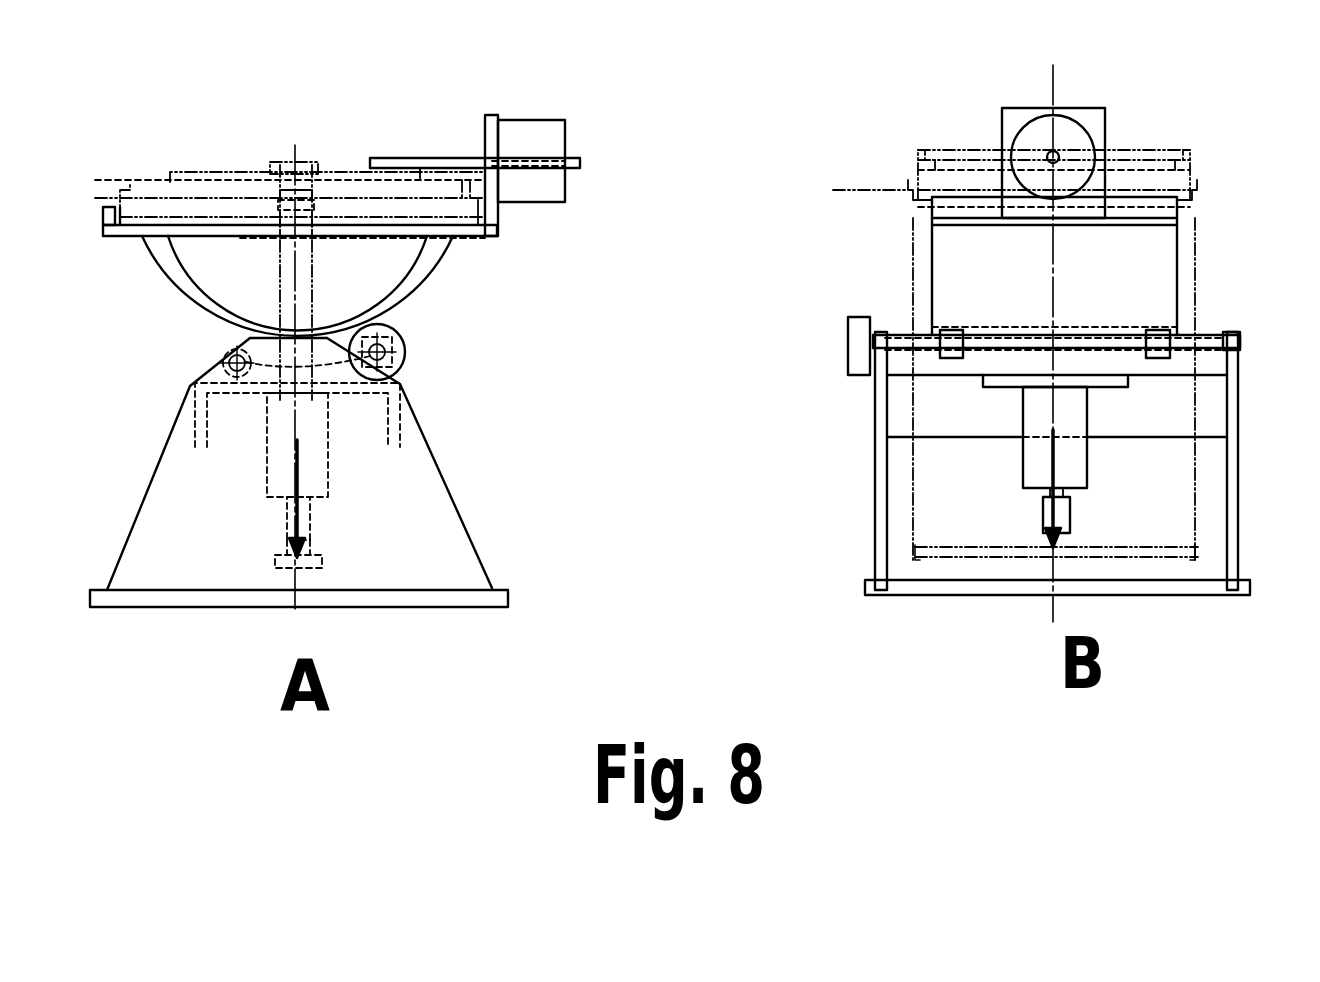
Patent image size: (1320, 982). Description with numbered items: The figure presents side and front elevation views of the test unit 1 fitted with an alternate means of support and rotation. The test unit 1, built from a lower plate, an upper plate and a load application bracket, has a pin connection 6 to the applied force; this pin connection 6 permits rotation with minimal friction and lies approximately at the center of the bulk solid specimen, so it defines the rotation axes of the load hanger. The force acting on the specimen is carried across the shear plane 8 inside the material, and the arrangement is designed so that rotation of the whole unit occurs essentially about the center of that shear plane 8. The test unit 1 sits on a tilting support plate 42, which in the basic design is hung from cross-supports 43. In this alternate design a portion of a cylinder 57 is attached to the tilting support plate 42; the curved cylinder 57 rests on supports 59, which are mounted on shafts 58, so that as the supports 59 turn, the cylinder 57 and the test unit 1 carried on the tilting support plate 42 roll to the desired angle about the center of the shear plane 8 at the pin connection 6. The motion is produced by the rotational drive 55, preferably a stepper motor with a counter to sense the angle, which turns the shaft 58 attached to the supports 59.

In FIG. 8A, the test unit 1 is at (220, 156).
In FIG. 8B, the test unit 1 is at (1146, 126).
In FIG. 8A, the pin connection 6 is at (295, 192).
In FIG. 8B, the pin connection 6 is at (909, 182).
In FIG. 8A, the shear plane 8 is at (98, 198).
In FIG. 8B, the shear plane 8 is at (947, 190).
In FIG. 8A, the tilting support plate 42 is at (363, 230).
In FIG. 8B, the tilting support plate 42 is at (987, 223).
In FIG. 8A, the cross-supports 43 is at (478, 206).
In FIG. 8B, the cross-supports 43 is at (1140, 205).
In FIG. 8A, the rotational drive 55 is at (390, 340).
In FIG. 8B, the rotational drive 55 is at (858, 353).
In FIG. 8A, the cylinder 57 is at (140, 255).
In FIG. 8B, the cylinder 57 is at (1110, 285).
In FIG. 8A, the shaft 58 is at (230, 363).
In FIG. 8B, the shaft 58 is at (910, 345).
In FIG. 8B, the supports 59 is at (950, 347).